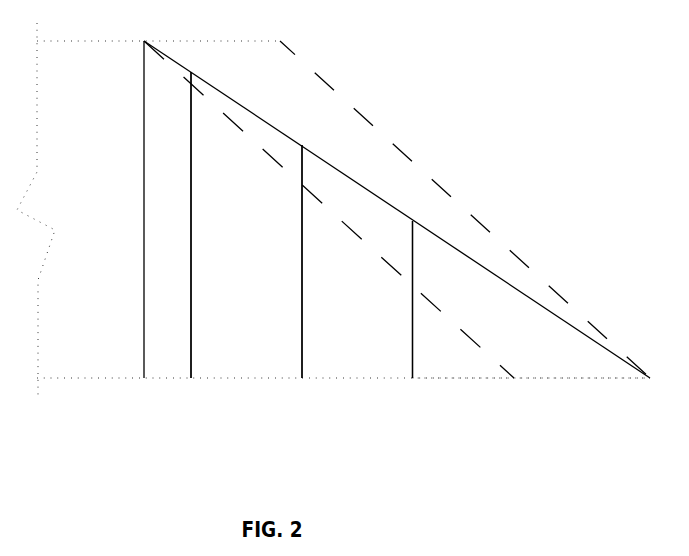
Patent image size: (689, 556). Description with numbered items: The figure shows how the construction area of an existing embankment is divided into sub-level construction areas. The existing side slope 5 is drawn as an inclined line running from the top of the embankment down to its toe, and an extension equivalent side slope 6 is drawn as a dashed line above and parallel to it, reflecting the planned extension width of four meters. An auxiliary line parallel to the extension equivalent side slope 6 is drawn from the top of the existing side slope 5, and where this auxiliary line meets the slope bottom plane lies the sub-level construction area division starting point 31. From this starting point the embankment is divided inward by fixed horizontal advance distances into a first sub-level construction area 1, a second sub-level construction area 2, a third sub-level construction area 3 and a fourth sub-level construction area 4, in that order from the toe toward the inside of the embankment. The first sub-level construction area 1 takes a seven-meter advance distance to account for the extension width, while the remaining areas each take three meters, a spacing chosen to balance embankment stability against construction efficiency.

The first sub-level construction area 1 is at (532, 299).
The second sub-level construction area 2 is at (357, 261).
The third sub-level construction area 3 is at (246, 225).
The fourth sub-level construction area 4 is at (167, 209).
The existing side slope 5 is at (397, 210).
The extension equivalent side slope 6 is at (435, 182).
The sub-level construction area division starting point 31 is at (343, 405).